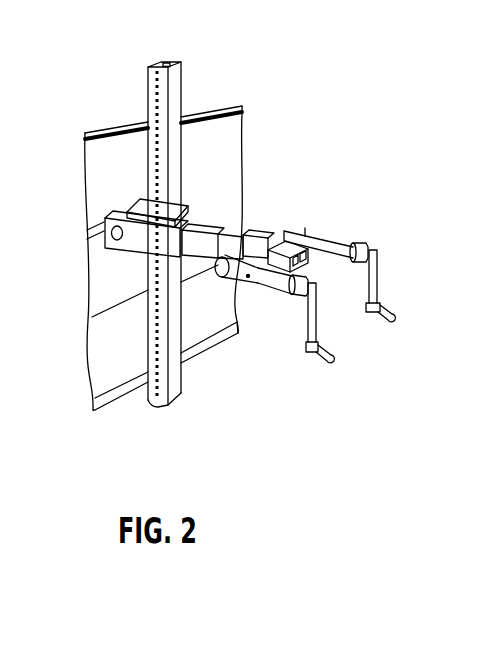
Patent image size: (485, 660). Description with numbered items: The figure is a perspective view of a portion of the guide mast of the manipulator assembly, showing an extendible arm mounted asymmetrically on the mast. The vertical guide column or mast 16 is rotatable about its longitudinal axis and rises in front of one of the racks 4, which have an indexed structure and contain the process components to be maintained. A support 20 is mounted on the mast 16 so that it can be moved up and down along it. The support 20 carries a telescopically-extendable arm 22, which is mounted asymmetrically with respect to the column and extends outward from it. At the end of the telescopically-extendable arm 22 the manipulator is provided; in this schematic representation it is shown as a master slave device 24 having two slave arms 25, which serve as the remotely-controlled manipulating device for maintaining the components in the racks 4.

The rack 4 is at (212, 107).
The guide column or mast 16 is at (172, 78).
The support 20 is at (138, 204).
The telescopically-extendable arm 22 is at (137, 250).
The master slave device 24 is at (290, 232).
The slave arms 25 is at (378, 284).